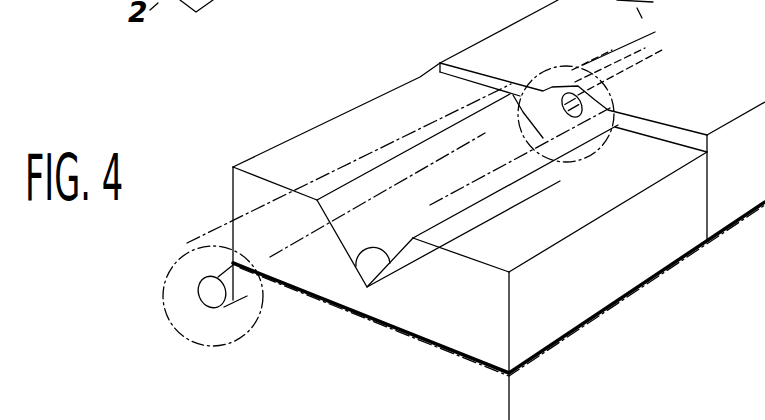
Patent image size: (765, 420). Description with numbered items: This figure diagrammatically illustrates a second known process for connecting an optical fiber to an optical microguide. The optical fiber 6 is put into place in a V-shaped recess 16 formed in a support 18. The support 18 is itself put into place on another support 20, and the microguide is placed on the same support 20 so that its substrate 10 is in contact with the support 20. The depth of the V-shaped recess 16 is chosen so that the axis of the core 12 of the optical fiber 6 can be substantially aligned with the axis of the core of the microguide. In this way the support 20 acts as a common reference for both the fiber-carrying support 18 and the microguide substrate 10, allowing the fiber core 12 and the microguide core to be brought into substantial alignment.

The optical fiber 6 is at (163, 270).
The substrate 10 is at (727, 203).
The core 12 is at (200, 302).
The V-shaped recess 16 is at (352, 268).
The support 18 is at (413, 85).
The support 20 is at (517, 395).